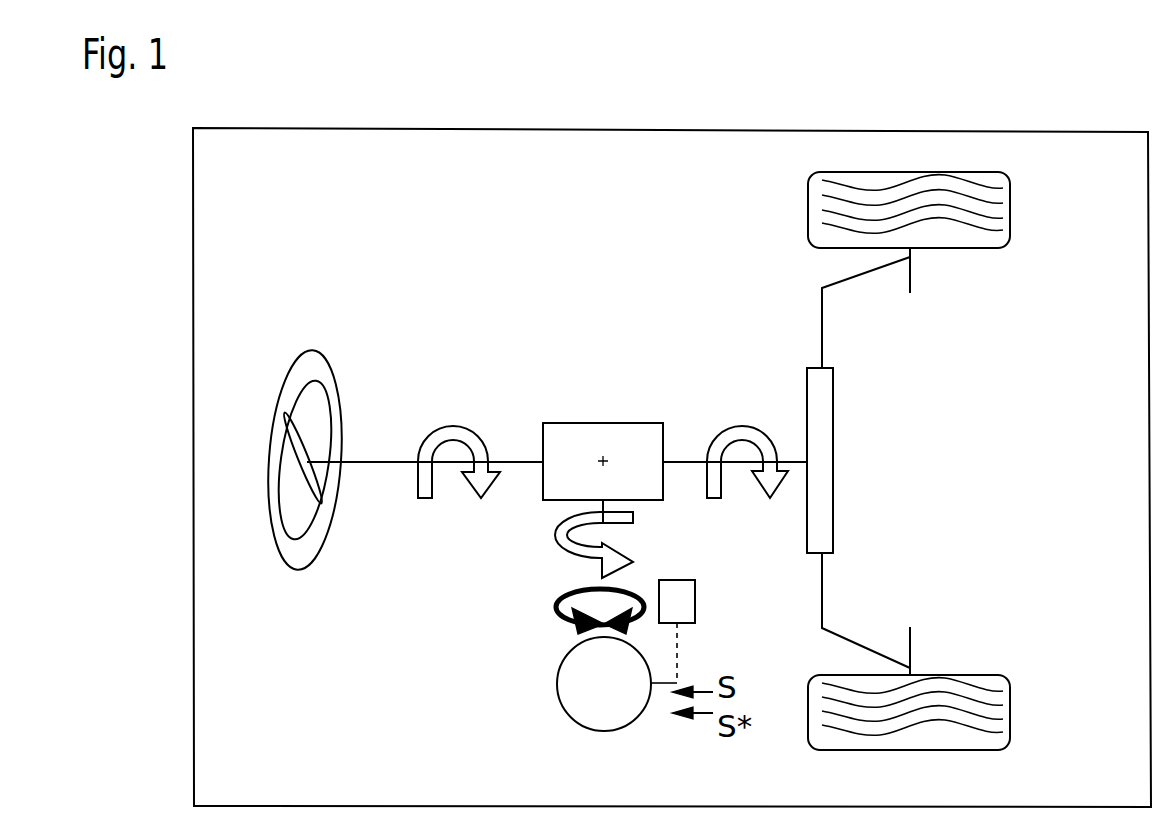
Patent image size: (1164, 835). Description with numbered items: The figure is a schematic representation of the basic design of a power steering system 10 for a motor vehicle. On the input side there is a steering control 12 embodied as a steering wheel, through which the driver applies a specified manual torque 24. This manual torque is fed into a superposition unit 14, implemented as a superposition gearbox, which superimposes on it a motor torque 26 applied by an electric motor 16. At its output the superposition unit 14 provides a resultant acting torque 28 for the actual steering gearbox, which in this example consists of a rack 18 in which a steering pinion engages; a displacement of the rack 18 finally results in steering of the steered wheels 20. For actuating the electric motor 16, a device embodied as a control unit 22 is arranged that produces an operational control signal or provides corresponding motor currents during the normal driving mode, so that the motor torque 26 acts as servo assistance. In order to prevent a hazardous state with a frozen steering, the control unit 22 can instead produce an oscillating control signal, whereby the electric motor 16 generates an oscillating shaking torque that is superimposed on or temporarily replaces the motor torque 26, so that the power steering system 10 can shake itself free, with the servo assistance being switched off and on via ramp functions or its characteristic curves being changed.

The power steering system 10 is at (287, 128).
The steering control 12 is at (278, 386).
The superposition unit 14 is at (604, 423).
The electric motor 16 is at (567, 714).
The rack 18 is at (806, 378).
The steered wheels 20 is at (1012, 208).
The control unit 22 is at (698, 613).
The manual torque 24 is at (452, 424).
The motor torque 26 is at (560, 549).
The resultant acting torque 28 is at (745, 425).